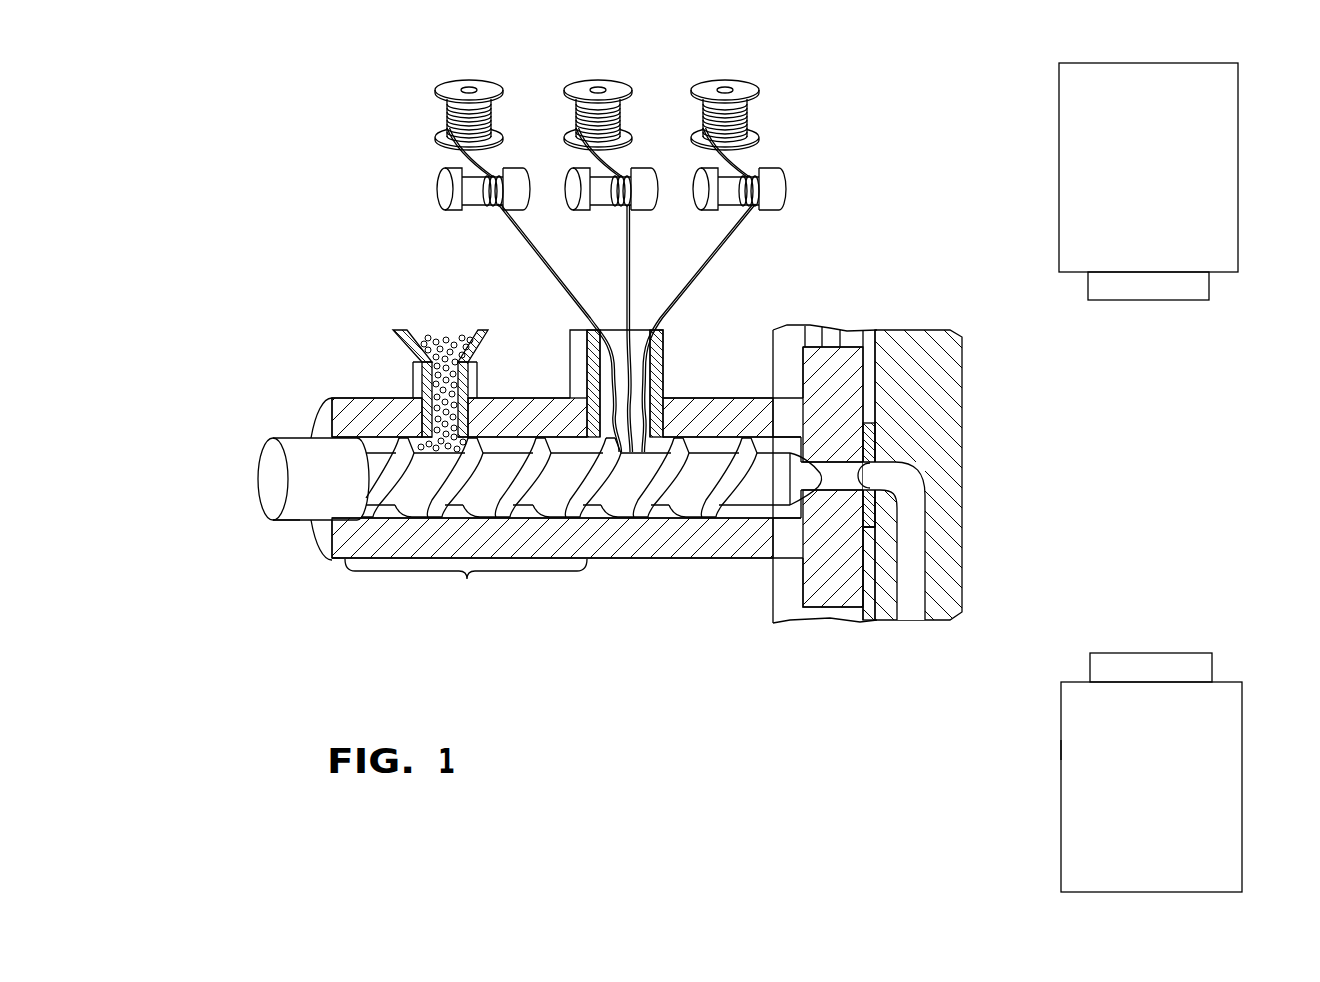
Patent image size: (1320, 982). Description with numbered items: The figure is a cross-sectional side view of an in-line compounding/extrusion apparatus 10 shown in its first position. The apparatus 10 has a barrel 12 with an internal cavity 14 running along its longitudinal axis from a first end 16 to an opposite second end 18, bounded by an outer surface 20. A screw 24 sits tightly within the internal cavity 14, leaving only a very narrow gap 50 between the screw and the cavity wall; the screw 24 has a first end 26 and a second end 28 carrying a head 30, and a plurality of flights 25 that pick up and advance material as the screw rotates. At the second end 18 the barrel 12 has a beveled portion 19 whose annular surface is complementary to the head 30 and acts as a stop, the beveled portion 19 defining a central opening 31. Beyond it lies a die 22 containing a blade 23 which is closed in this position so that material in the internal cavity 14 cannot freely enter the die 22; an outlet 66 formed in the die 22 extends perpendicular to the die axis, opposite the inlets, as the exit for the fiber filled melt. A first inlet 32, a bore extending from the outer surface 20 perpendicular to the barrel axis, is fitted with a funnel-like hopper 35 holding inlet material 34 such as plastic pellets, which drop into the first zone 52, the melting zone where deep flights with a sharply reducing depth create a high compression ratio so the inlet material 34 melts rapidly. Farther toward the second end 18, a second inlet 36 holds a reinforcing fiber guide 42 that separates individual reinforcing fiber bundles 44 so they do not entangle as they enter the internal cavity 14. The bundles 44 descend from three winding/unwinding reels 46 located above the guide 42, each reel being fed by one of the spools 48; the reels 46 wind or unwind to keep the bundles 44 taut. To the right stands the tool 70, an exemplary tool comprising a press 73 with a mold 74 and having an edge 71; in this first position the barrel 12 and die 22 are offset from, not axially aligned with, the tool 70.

The in-line compounding/extrusion apparatus 10 is at (360, 100).
The barrel 12 is at (337, 562).
The internal cavity 14 is at (380, 513).
The first end 16 is at (332, 398).
The second end 18 is at (860, 328).
The beveled portion 19 is at (803, 492).
The outer surface 20 is at (733, 560).
The die 22 is at (929, 330).
The blade 23 is at (867, 527).
The screw 24 is at (270, 522).
The flights 25 is at (575, 500).
The first end 26 is at (270, 455).
The second end 28 is at (798, 329).
The head 30 is at (812, 472).
The central opening 31 is at (842, 467).
The first inlet 32 is at (432, 392).
The inlet material 34 is at (447, 350).
The hopper 35 is at (397, 335).
The second inlet 36 is at (648, 395).
The reinforcing fiber guide 42 is at (645, 353).
The reinforcing fiber bundles 44 is at (700, 272).
The winding/unwinding reels 46 is at (775, 178).
The spools 48 is at (757, 90).
The gap 50 is at (560, 443).
The first zone 52 is at (466, 584).
The outlet 66 is at (910, 612).
The tool 70 is at (1040, 748).
The edge 71 is at (1212, 662).
The press 73 is at (1148, 181).
The mold 74 is at (1184, 761).